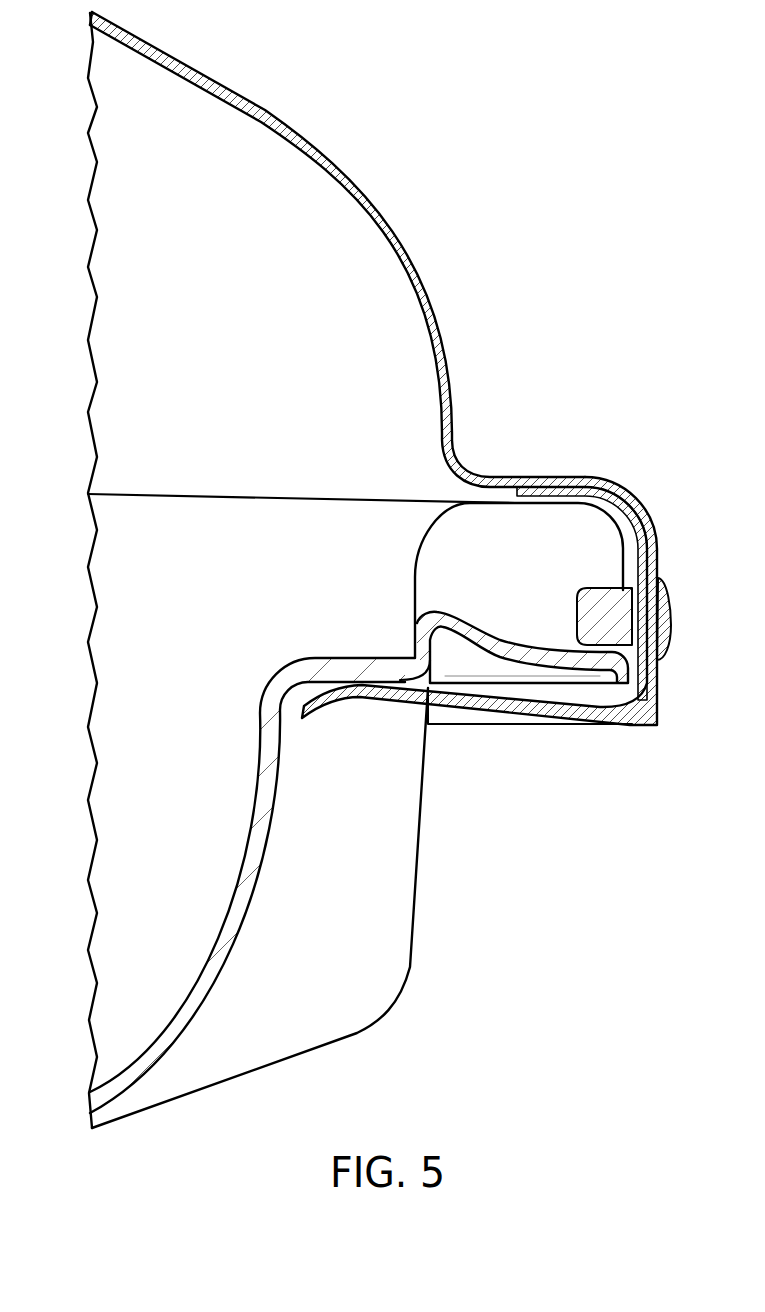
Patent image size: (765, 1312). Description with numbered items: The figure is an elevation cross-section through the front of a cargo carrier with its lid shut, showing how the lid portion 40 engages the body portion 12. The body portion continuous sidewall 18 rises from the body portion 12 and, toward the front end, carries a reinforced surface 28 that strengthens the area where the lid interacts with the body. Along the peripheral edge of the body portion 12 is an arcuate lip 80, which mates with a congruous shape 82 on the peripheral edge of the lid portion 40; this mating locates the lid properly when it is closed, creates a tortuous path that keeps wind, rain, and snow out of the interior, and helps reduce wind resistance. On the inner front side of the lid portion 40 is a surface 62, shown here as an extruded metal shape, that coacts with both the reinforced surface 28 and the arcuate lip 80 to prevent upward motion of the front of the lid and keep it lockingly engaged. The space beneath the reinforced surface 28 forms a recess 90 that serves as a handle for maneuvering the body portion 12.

The body portion 12 is at (406, 1017).
The body portion continuous sidewall 18 is at (412, 877).
The reinforced surface 28 is at (545, 672).
The lid portion 40 is at (306, 114).
The surface 62 is at (453, 707).
The arcuate lip 80 is at (523, 516).
The congruous shape 82 is at (627, 502).
The recess 90 is at (485, 668).